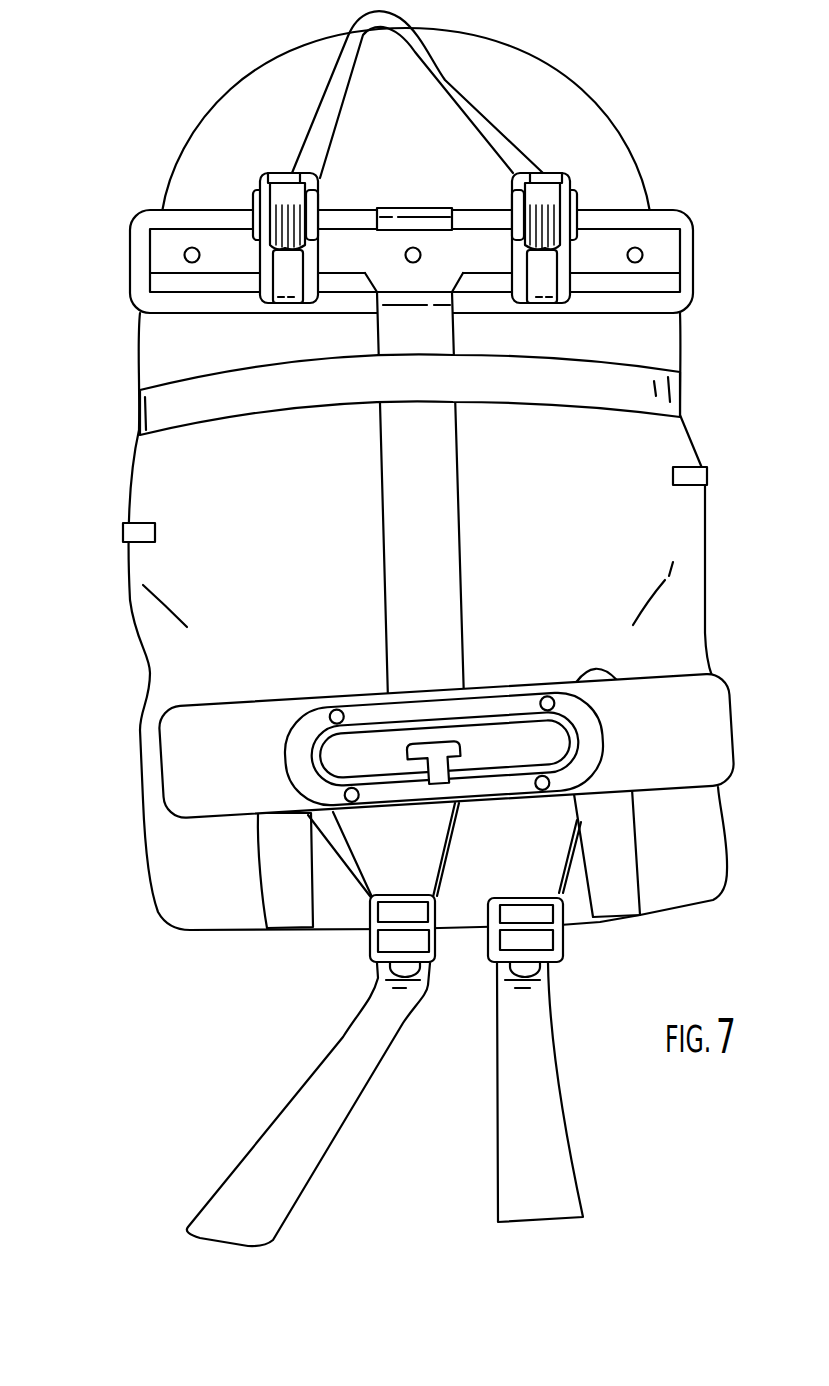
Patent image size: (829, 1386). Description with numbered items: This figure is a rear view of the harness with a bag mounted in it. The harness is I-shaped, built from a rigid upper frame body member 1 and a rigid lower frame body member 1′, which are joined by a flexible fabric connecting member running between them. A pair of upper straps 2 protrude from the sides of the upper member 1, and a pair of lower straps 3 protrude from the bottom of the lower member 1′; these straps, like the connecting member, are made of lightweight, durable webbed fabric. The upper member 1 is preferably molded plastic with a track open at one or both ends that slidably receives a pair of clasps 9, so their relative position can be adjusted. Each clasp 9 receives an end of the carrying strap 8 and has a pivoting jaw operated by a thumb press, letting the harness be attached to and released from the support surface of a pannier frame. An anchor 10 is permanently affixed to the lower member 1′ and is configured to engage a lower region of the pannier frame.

The upper frame body member 1 is at (133, 218).
The lower frame body member 1′ is at (183, 733).
The upper straps 2 is at (287, 413).
The lower straps 3 is at (257, 867).
The carrying strap 8 is at (493, 103).
The clasps 9 is at (500, 197).
The anchor 10 is at (465, 807).